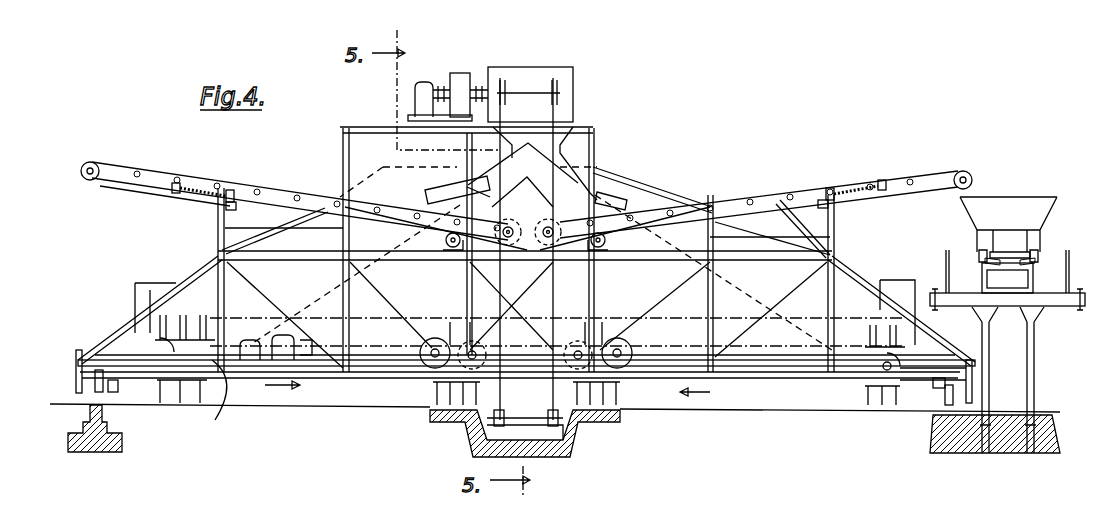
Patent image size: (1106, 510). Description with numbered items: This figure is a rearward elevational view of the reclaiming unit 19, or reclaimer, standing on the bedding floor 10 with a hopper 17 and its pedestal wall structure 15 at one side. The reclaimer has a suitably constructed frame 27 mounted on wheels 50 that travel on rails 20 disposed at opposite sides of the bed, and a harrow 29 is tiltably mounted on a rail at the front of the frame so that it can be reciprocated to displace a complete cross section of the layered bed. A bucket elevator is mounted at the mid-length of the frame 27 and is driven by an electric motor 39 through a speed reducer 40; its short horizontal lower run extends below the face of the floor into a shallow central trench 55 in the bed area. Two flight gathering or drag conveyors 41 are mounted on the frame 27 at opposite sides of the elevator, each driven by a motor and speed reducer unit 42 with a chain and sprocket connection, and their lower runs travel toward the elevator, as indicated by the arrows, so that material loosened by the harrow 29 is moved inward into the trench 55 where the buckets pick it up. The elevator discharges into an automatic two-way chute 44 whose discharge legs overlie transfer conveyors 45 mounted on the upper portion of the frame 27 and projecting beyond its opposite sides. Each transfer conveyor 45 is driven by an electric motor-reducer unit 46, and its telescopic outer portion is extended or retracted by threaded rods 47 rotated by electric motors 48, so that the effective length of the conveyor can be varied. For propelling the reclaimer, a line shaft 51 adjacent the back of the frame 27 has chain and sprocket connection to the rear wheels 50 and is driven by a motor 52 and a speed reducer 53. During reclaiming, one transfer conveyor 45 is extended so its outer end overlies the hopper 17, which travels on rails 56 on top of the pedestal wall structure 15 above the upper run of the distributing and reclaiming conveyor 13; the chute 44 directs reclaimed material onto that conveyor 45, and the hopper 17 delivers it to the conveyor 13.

The bedding floor 10 is at (648, 412).
The distributing and reclaiming conveyor 13 is at (1010, 245).
The pedestal wall structure 15 is at (985, 388).
The hopper 17 is at (993, 198).
The reclaiming unit 19 is at (606, 180).
The rails 20 is at (92, 405).
The frame 27 is at (135, 335).
The harrow 29 is at (660, 190).
The electric motor 39 is at (422, 85).
The speed reducer 40 is at (462, 78).
The flight gathering conveyor 41 is at (175, 325).
The motor and speed reducer unit 42 is at (435, 340).
The automatic two-way chute 44 is at (520, 68).
The transfer conveyor 45 is at (281, 185).
The electric motor-reducer unit 46 is at (446, 242).
The threaded rod 47 is at (196, 186).
The electric motor 48 is at (225, 212).
The wheels 50 is at (110, 387).
The line shaft 51 is at (212, 398).
The motor 52 is at (250, 338).
The speed reducer 53 is at (285, 335).
The trench 55 is at (470, 447).
The rails 56 is at (980, 262).